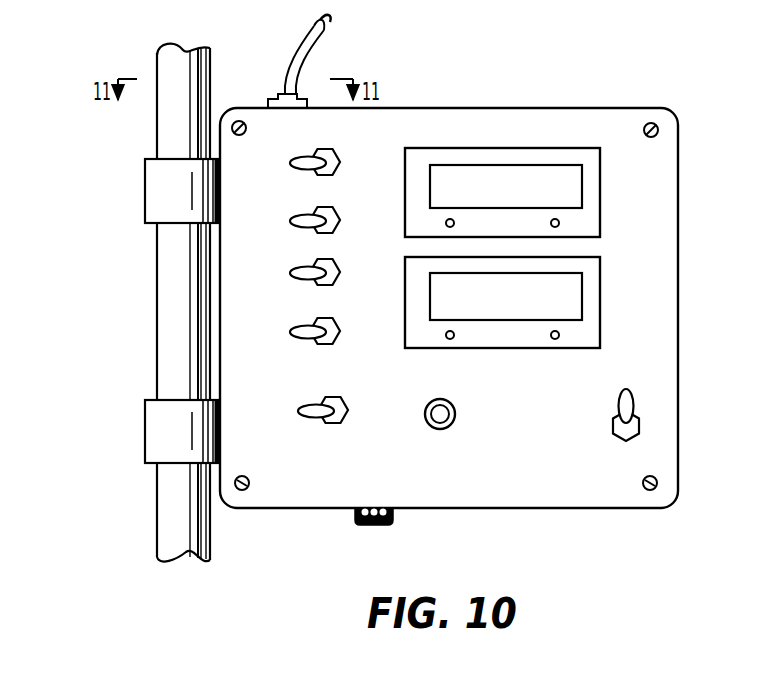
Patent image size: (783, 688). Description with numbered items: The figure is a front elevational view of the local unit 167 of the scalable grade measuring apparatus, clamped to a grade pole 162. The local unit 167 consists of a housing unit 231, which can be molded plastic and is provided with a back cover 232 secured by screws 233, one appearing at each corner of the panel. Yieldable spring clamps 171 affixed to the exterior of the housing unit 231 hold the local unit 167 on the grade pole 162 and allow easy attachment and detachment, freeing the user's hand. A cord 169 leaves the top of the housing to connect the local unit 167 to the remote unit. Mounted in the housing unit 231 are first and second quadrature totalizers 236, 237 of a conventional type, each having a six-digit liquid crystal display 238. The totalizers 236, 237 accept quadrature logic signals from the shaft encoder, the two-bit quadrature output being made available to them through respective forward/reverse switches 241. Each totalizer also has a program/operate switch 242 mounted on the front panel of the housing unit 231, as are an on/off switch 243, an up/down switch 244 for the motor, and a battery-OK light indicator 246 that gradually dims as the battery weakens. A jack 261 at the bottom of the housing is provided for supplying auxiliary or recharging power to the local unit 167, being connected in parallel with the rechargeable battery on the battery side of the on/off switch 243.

The grade pole 162 is at (168, 131).
The local unit 167 is at (518, 100).
The cord 169 is at (308, 46).
The spring clamps 171 is at (161, 197).
The housing unit 231 is at (690, 158).
The back cover 232 is at (540, 106).
The screws 233 is at (238, 121).
The first quadrature totalizer 236 is at (612, 176).
The second quadrature totalizer 237 is at (612, 294).
The liquid crystal displays 238 is at (447, 166).
The forward/reverse switches 241 is at (306, 134).
The program/operate switch 242 is at (308, 191).
The on/off switch 243 is at (318, 397).
The up/down switch 244 is at (634, 392).
The battery-OK light indicator 246 is at (458, 380).
The jack 261 is at (392, 522).